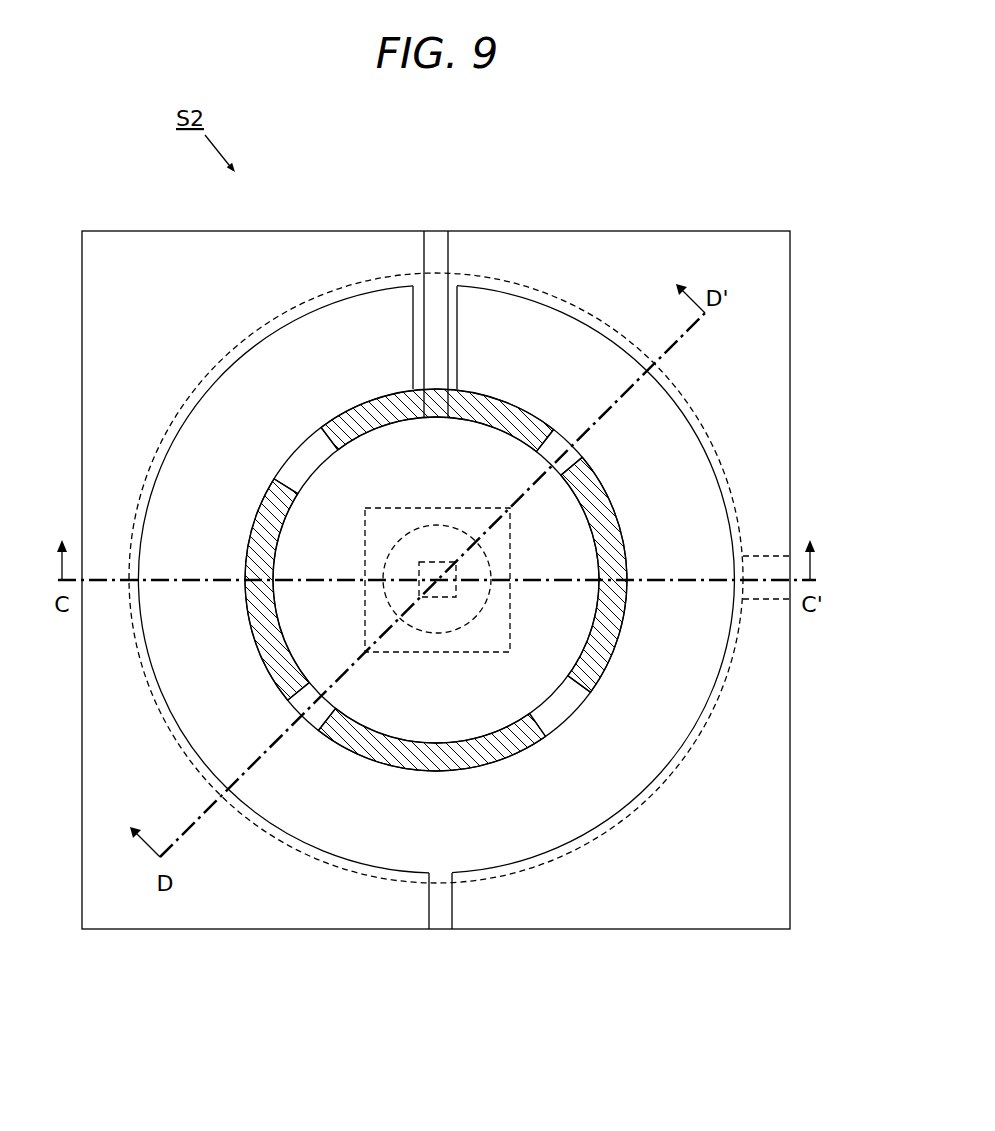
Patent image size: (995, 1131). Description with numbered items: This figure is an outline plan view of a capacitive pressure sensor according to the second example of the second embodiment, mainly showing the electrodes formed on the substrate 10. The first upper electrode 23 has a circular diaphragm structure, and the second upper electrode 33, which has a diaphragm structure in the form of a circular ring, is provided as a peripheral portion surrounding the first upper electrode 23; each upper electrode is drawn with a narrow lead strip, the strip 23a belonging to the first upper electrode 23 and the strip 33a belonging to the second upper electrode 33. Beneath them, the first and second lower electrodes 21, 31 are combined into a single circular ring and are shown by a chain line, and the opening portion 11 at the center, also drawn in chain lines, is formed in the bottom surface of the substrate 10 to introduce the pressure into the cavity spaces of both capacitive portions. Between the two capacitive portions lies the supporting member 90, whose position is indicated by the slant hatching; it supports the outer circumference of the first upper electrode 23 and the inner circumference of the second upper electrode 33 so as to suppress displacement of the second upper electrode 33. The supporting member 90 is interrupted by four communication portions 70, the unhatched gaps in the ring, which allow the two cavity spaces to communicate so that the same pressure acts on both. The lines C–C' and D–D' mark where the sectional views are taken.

The substrate 10 is at (638, 228).
The opening portion 11 is at (417, 572).
The first lower electrode 21 is at (725, 465).
The second lower electrode 31 is at (766, 577).
The first upper electrode 23 is at (436, 576).
The lead of inner electrode 23a is at (435, 253).
The second upper electrode 33 is at (703, 435).
The lead of outer electrode 33a is at (442, 907).
The communication portions 70 is at (313, 445).
The supporting member 90 is at (383, 408).